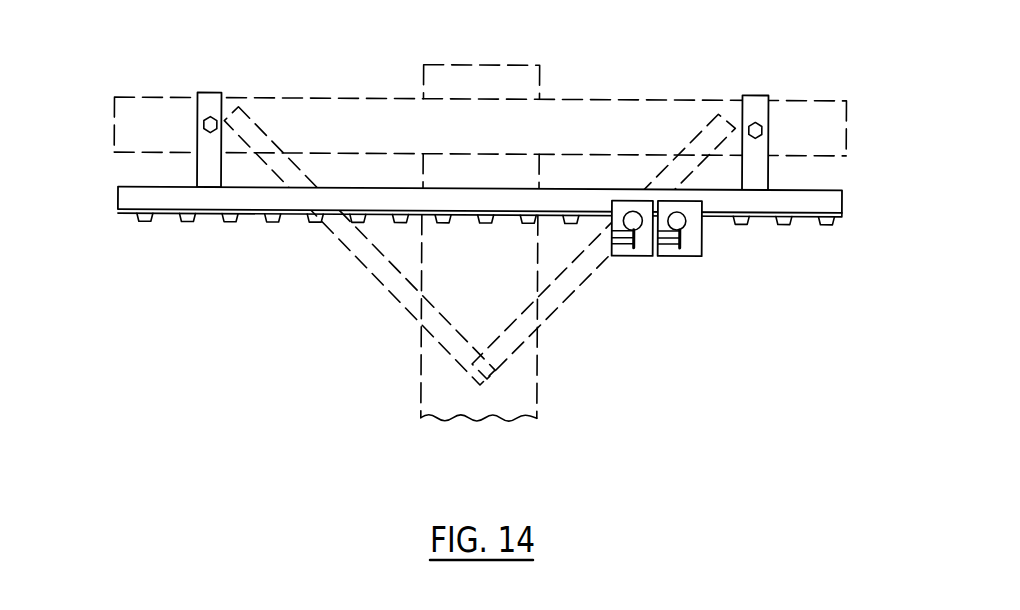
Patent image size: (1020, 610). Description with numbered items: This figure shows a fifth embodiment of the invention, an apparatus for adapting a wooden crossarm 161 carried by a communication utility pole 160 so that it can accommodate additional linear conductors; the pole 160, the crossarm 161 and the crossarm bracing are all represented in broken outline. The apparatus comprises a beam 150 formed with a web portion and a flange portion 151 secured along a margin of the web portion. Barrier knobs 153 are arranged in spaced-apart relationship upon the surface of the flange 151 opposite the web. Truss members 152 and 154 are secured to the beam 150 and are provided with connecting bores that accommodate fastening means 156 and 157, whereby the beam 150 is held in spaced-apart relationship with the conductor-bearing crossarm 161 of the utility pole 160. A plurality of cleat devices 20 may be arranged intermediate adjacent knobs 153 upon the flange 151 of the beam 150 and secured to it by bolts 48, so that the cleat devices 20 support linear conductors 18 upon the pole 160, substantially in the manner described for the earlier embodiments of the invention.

The linear conductors 18 is at (634, 247).
The cleat devices 20 is at (620, 257).
The bolts 48 is at (686, 226).
The beam 150 is at (145, 222).
The flange portion 151 is at (163, 218).
The truss member 152 is at (207, 94).
The barrier knobs 153 is at (263, 222).
The truss member 154 is at (757, 94).
The fastening means 156 is at (218, 118).
The fastening means 157 is at (746, 121).
The communication utility pole 160 is at (540, 382).
The crossarm 161 is at (336, 98).